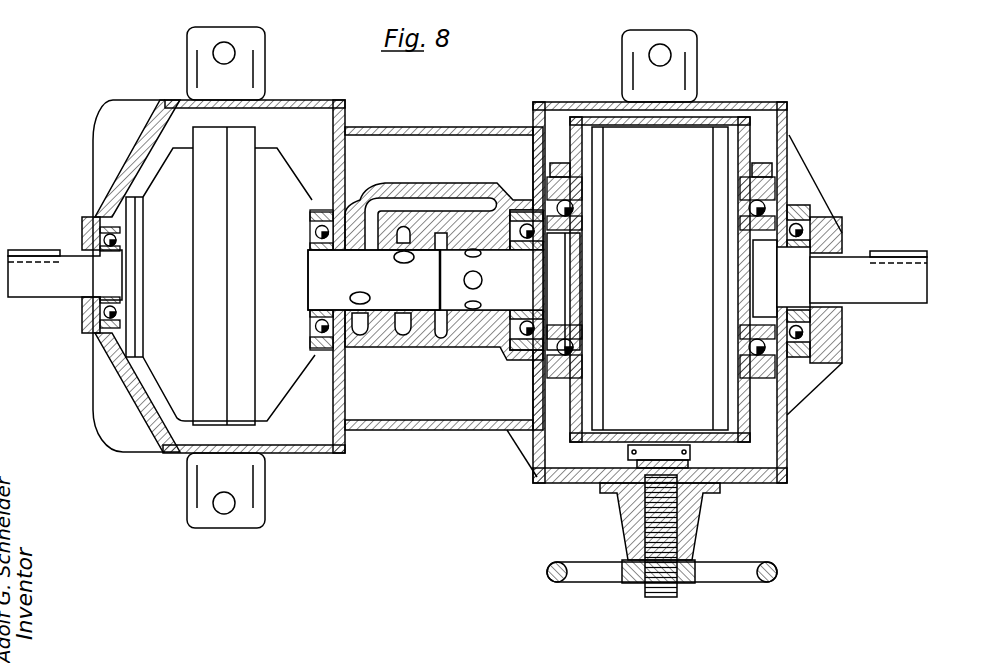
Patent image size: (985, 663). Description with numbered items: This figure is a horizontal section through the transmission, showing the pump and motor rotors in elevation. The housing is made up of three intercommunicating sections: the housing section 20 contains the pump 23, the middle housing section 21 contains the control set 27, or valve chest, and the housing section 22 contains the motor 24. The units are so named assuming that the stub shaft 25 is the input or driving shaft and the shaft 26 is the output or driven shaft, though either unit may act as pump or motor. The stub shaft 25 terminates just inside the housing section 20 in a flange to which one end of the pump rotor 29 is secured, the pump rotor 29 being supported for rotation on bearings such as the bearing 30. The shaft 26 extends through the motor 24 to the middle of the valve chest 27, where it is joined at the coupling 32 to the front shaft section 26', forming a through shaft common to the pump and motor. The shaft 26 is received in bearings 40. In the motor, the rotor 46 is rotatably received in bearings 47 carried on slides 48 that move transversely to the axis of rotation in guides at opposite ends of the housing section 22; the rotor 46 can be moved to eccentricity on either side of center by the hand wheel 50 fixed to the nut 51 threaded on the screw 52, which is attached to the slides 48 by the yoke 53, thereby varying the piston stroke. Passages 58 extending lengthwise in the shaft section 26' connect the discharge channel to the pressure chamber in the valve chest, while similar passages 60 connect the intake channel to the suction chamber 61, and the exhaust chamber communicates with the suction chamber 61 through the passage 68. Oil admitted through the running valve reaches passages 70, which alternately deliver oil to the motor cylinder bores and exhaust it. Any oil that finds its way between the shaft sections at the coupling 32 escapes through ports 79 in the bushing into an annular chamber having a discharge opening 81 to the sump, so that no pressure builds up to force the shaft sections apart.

The housing section 20 is at (167, 452).
The middle housing section 21 is at (437, 430).
The housing section 22 is at (750, 102).
The pump 23 is at (283, 426).
The motor 24 is at (591, 450).
The stub shaft 25 is at (44, 288).
The shaft 26 is at (870, 277).
The front shaft section 26' is at (374, 280).
The control set 27 is at (407, 350).
The pump rotor 29 is at (148, 277).
The bearing 30 is at (112, 243).
The coupling 32 is at (438, 288).
The bearing 40 is at (833, 223).
The rotor 46 is at (662, 278).
The bearing 47 is at (752, 205).
The slide 48 is at (777, 378).
The hand wheel 50 is at (795, 577).
The nut 51 is at (704, 532).
The screw 52 is at (663, 597).
The yoke 53 is at (733, 442).
The passage 58 is at (406, 260).
The passage 60 is at (362, 292).
The suction chamber 61 is at (361, 334).
The passage 68 is at (453, 197).
The passage 70 is at (481, 279).
The port 79 is at (438, 243).
The discharge opening 81 is at (440, 340).